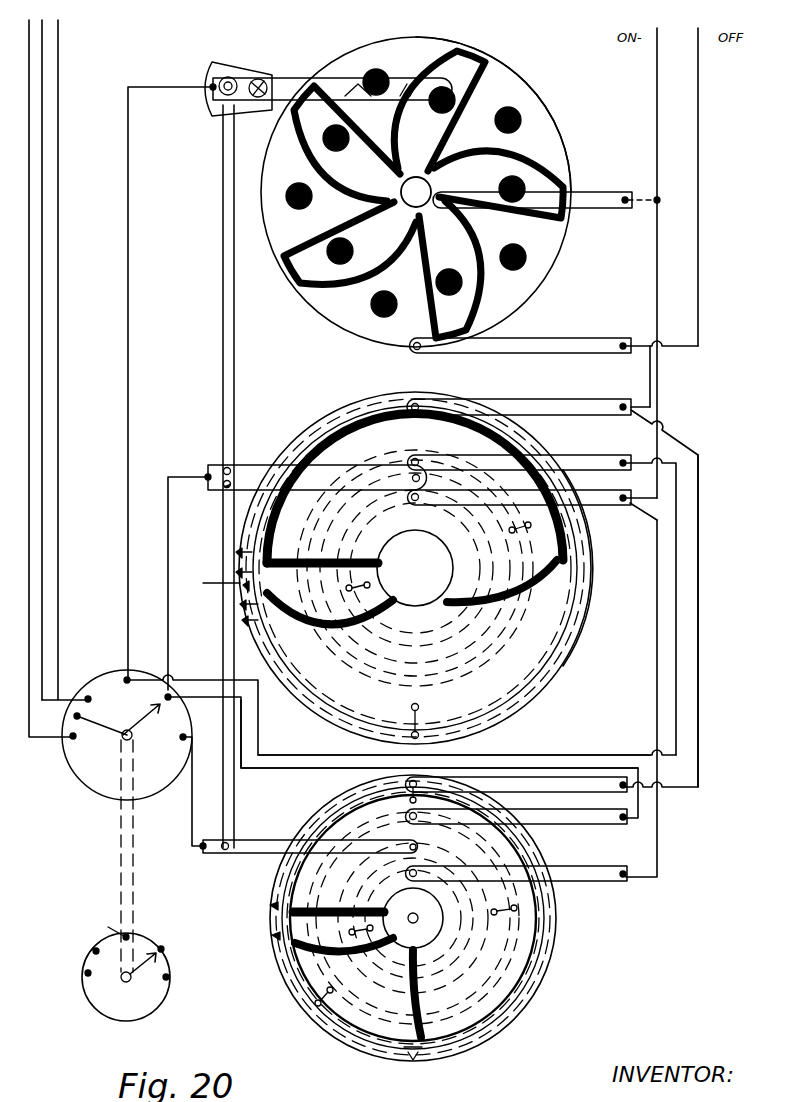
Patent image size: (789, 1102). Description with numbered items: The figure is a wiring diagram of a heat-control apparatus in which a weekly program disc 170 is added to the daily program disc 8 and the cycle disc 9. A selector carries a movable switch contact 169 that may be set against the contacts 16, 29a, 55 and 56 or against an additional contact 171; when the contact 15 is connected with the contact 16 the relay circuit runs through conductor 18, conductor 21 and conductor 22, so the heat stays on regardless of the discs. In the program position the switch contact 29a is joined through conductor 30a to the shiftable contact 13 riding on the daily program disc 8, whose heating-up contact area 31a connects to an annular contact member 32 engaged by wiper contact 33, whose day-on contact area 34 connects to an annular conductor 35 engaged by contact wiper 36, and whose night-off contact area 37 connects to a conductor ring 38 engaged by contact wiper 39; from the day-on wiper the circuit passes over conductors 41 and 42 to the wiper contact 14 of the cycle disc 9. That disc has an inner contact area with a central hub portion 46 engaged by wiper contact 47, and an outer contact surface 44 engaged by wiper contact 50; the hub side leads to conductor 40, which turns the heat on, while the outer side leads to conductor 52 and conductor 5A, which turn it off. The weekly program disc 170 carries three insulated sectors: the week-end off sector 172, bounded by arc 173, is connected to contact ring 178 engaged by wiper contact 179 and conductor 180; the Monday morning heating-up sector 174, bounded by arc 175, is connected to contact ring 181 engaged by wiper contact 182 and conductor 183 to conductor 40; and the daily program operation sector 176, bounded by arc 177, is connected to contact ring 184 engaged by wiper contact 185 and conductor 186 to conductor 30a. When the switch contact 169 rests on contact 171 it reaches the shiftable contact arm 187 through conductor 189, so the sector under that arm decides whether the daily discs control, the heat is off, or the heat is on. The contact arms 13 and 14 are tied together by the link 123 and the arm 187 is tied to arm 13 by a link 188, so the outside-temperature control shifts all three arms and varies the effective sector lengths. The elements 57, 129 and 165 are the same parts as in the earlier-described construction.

The wiper contact 14 is at (415, 72).
The switch and lever 129 is at (308, 48).
The outer contact surface 44 is at (543, 121).
The central hub portion 46 is at (440, 163).
The conductor 18 is at (490, 167).
The cycle disc 9 is at (585, 159).
The conductor 40 is at (657, 121).
The conductor 52 is at (699, 119).
The wiper contact 47 is at (593, 208).
The conductor 42 is at (129, 233).
The conductor 57 is at (30, 313).
The conductor 21 is at (44, 356).
The conductor 22 is at (59, 460).
The link 123 is at (223, 319).
The wiper contact 50 is at (596, 345).
The conductor 5A is at (650, 379).
The contact wiper 39 is at (572, 410).
The conductor ring 38 is at (384, 401).
The day-on contact area 34 is at (335, 413).
The shiftable contact 13 is at (377, 477).
The contact wiper 36 is at (592, 457).
The wiper contact 33 is at (586, 502).
The annular contact member 32 is at (447, 514).
The program disc 8 is at (593, 567).
The annular conductor 35 is at (535, 600).
The night-off contact area 37 is at (569, 674).
The conductor 30a is at (168, 562).
The heating-up contact area 31a is at (210, 578).
The link 188 is at (228, 615).
The switch contact 29a is at (170, 695).
The contact 55 is at (125, 677).
The contact 16 is at (88, 696).
The contact 15 is at (72, 717).
The contact 56 is at (72, 740).
The switch contact 169 is at (162, 712).
The switch contact 171 is at (184, 742).
The conductor 41 is at (556, 752).
The conductor 180 is at (699, 701).
The conductor 183 is at (658, 820).
The conductor 186 is at (263, 770).
The conductor 189 is at (192, 836).
The wiper contact 179 is at (556, 791).
The wiper contact 185 is at (556, 827).
The daily program operation sector 176 is at (560, 906).
The wiper contact 182 is at (470, 872).
The weekly program disc 170 is at (556, 936).
The arc 177 is at (598, 928).
The arc 173 is at (318, 1032).
The contact ring 184 is at (500, 951).
The week-end off sector 172 is at (353, 1035).
The shiftable contact arm 187 is at (366, 855).
The contact ring 181 is at (392, 960).
The contact ring 178 is at (305, 1000).
The arc 175 is at (270, 905).
The Monday morning heating-up sector 174 is at (272, 935).
The cycle selector 165 is at (150, 1008).